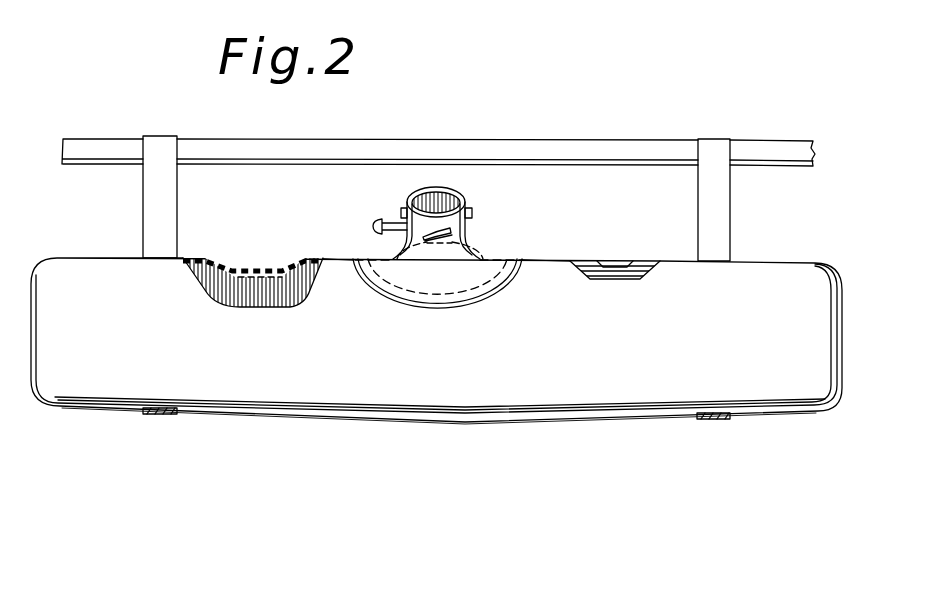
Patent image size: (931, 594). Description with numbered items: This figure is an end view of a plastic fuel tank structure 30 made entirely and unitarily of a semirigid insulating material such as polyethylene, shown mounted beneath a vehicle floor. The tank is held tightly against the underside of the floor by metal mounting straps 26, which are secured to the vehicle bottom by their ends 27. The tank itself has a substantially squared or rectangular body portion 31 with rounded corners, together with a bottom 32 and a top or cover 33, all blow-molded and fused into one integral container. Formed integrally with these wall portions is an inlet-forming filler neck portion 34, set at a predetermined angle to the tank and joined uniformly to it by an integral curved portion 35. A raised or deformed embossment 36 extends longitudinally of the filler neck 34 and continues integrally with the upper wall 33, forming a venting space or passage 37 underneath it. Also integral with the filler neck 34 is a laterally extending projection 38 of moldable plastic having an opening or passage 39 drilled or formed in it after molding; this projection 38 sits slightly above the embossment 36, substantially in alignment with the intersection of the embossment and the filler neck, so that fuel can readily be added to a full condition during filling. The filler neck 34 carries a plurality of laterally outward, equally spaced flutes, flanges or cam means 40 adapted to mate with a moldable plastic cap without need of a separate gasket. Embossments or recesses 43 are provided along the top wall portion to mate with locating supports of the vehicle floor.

The mounting straps 26 is at (152, 207).
The strap end 27 is at (159, 136).
The plastic fuel tank structure 30 is at (75, 258).
The body portion 31 is at (215, 385).
The bottom 32 is at (273, 412).
The top or cover 33 is at (193, 258).
The filler neck portion 34 is at (455, 231).
The integral curved portion 35 is at (482, 296).
The raised embossment 36 is at (467, 238).
The venting passage 37 is at (433, 247).
The lateral projection 38 is at (392, 215).
The opening or passage 39 is at (372, 226).
The flutes, flanges or cam means 40 is at (403, 208).
The embossments or recesses 43 is at (263, 273).